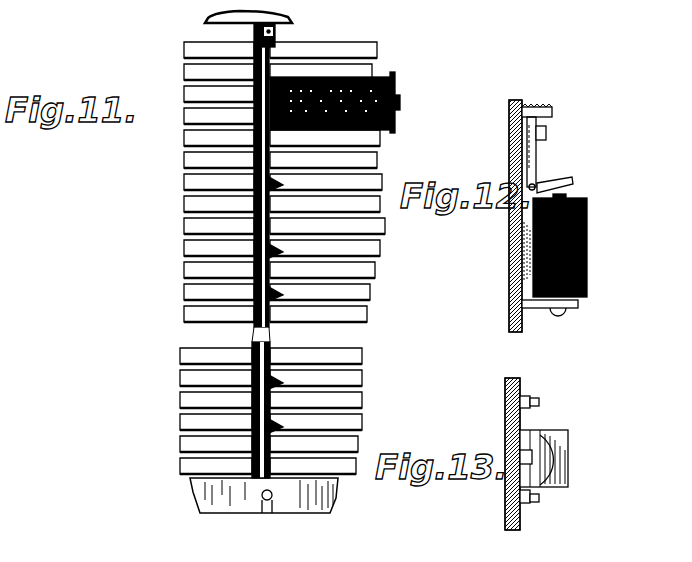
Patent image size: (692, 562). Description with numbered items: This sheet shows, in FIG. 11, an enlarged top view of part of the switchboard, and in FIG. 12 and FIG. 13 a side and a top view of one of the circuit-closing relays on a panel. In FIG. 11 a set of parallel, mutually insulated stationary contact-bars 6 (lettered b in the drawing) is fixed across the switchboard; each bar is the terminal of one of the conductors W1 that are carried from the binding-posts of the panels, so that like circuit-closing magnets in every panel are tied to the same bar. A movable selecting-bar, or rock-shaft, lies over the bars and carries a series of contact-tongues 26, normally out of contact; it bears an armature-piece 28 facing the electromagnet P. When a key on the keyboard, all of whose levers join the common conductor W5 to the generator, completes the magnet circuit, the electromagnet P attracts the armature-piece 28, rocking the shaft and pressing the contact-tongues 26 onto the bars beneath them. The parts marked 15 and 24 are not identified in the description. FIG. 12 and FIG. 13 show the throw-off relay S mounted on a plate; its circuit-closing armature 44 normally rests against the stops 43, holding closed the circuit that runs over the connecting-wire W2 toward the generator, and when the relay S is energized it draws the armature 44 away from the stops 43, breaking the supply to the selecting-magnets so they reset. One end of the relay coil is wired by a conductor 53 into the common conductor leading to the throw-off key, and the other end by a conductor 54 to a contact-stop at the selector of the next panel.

In FIG. 11, the stationary contact-bar 6 is at (291, 258).
In FIG. 11, the cap 15 is at (248, 29).
In FIG. 11, the armature-piece 28 is at (256, 118).
In FIG. 11, the bar section 24 is at (268, 330).
In FIG. 11, the electromagnet P is at (412, 96).
In FIG. 11, the contact-tongue 26 is at (294, 427).
In FIG. 12, the stop 43 is at (509, 112).
In FIG. 13, the stop 43 is at (505, 481).
In FIG. 12, the circuit-closing armature 44 is at (563, 148).
In FIG. 13, the circuit-closing armature 44 is at (560, 439).
In FIG. 12, the relay S is at (567, 245).
In FIG. 13, the relay S is at (584, 458).
In FIG. 12, the conductor 54 is at (587, 205).
In FIG. 12, the conductor 53 is at (586, 290).
In FIG. 12, the common conductor W5 is at (465, 2).
In FIG. 13, the connecting-wire W2 is at (505, 393).
In FIG. 13, the conductor W1 is at (517, 510).